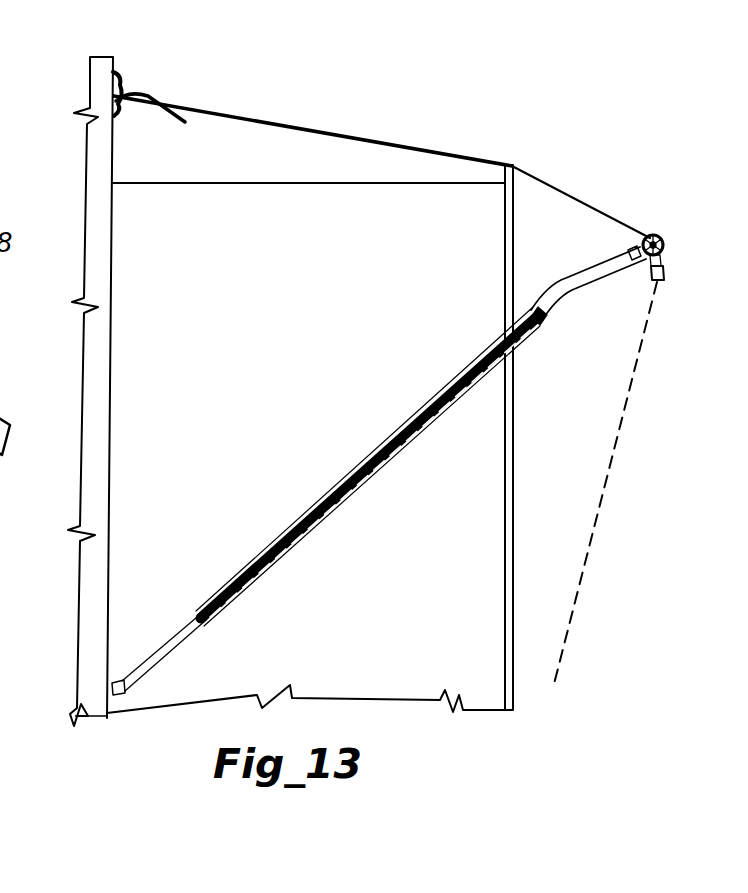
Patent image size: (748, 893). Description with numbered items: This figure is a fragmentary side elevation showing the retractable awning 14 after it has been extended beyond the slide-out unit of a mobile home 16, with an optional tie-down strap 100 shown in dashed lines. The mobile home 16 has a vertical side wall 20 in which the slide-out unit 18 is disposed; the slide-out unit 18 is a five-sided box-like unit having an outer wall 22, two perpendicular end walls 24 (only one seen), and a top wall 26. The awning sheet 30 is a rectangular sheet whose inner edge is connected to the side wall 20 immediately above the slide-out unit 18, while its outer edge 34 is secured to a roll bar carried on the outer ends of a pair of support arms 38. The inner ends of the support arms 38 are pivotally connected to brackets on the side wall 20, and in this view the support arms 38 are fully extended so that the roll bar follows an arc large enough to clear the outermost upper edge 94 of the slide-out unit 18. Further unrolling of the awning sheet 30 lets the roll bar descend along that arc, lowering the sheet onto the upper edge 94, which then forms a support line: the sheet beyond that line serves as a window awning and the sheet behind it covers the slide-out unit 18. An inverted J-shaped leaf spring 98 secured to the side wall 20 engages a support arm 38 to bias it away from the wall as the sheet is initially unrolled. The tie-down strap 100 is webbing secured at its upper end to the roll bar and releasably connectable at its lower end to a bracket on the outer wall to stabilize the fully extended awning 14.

The retractable awning 14 is at (584, 158).
The mobile home 16 is at (80, 622).
The slide-out unit 18 is at (297, 206).
The side wall 20 is at (110, 162).
The outer wall 22 is at (512, 442).
The end wall 24 is at (441, 690).
The top wall 26 is at (403, 183).
The awning sheet 30 is at (303, 126).
The outer edge 34 is at (676, 186).
The support arm 38 is at (354, 474).
The outermost upper edge 94 is at (566, 116).
The leaf spring 98 is at (185, 122).
The tie-down strap 100 is at (612, 486).